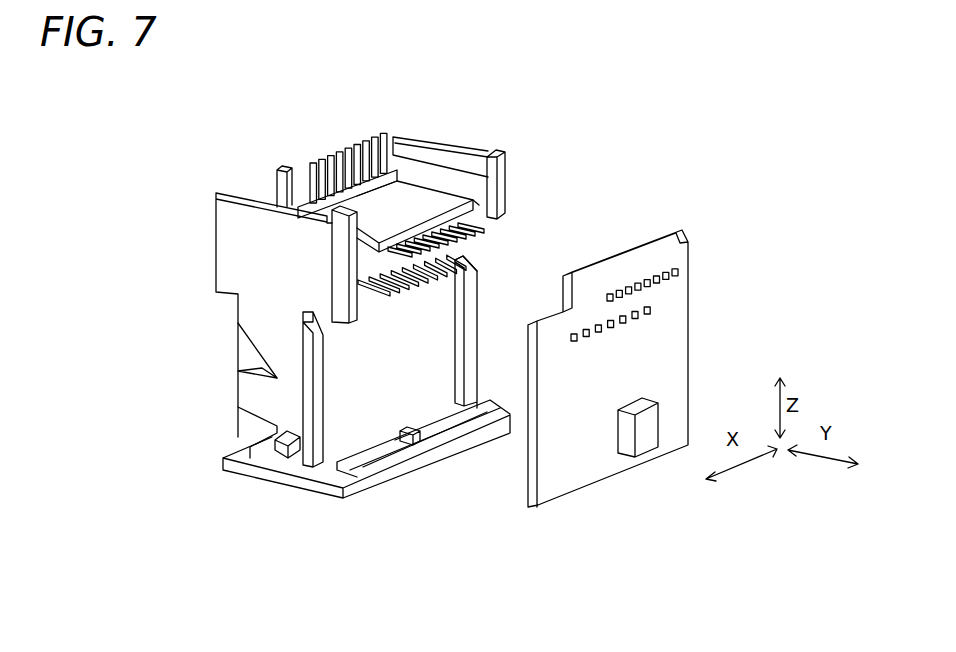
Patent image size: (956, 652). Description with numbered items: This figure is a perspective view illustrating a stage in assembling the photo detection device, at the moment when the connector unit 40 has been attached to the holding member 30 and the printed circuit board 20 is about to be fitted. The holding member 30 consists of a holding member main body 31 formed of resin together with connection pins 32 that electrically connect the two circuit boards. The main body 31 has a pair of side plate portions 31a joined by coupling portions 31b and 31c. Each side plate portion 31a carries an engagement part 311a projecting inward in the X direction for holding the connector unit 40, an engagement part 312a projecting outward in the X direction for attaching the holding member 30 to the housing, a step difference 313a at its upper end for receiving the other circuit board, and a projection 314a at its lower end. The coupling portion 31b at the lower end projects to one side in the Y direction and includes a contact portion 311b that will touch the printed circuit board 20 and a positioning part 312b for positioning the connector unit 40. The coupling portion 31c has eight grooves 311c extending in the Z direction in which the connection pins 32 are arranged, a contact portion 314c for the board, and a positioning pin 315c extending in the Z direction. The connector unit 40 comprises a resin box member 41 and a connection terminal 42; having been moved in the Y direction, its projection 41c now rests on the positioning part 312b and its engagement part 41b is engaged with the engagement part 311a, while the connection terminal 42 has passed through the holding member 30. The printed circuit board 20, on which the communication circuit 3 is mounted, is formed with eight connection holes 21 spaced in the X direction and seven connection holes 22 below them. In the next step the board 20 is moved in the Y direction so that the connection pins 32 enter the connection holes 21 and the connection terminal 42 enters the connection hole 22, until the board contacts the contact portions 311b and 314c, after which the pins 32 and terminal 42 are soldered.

The communication circuit 3 is at (650, 440).
The printed circuit board 20 is at (587, 470).
The connection hole 21 is at (610, 295).
The connection hole 22 is at (571, 337).
The holding member 30 is at (513, 177).
The holding member main body 31 is at (503, 198).
The side plate portion 31a is at (242, 233).
The coupling portion 31b is at (390, 462).
The coupling portion 31c is at (415, 193).
The engagement part 311a is at (257, 368).
The contact portion 311b is at (372, 460).
The groove 311c is at (334, 162).
The engagement part 312a is at (282, 452).
The positioning part 312b is at (418, 433).
The step difference 313a is at (481, 158).
The projection 314a is at (313, 485).
The contact portion 314c is at (466, 212).
The positioning pin 315c is at (275, 180).
The connection pin 32 is at (336, 186).
The connector unit 40 is at (250, 350).
The box member 41 is at (445, 347).
The engagement part 41b is at (265, 425).
The projection 41c is at (413, 440).
The connection terminal 42 is at (478, 268).